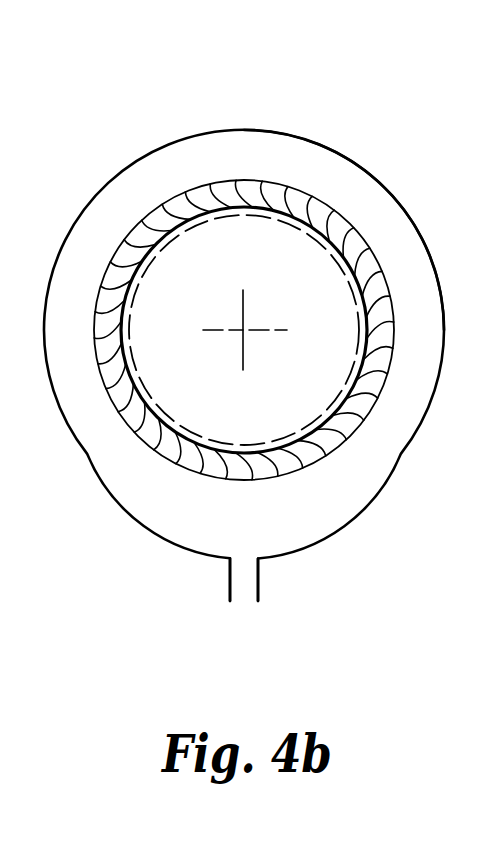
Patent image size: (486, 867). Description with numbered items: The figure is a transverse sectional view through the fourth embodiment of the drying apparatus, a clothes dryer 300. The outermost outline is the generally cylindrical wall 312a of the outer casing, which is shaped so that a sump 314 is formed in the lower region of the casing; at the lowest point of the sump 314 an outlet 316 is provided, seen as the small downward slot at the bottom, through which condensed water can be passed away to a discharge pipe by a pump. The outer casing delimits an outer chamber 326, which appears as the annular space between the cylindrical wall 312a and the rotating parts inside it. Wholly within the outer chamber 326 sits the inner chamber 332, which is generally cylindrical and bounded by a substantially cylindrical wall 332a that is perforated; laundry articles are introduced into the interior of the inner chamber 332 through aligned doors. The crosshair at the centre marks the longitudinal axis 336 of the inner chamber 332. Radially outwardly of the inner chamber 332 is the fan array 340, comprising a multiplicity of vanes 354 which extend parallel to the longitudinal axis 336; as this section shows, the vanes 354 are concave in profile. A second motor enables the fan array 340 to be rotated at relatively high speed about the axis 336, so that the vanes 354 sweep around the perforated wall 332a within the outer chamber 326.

The clothes dryer 300 is at (194, 113).
The cylindrical wall 312a is at (328, 148).
The sump 314 is at (305, 525).
The outlet 316 is at (243, 587).
The outer chamber 326 is at (385, 205).
The inner chamber 332 is at (218, 401).
The cylindrical wall 332a is at (258, 213).
The longitudinal axis 336 is at (246, 334).
The fan array 340 is at (147, 215).
The vanes 354 is at (383, 302).